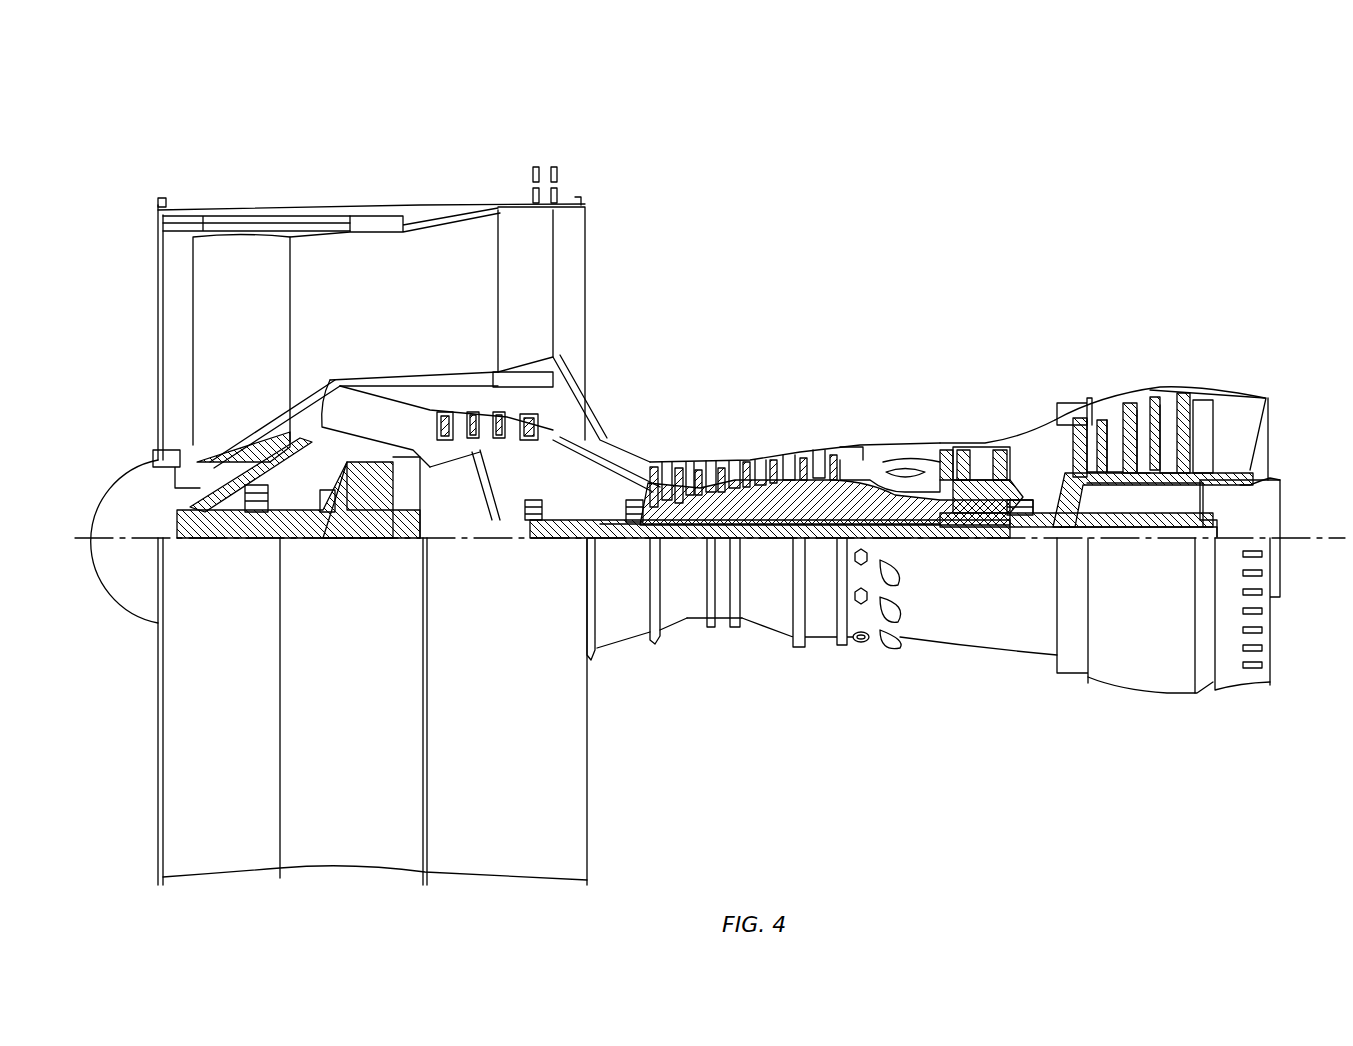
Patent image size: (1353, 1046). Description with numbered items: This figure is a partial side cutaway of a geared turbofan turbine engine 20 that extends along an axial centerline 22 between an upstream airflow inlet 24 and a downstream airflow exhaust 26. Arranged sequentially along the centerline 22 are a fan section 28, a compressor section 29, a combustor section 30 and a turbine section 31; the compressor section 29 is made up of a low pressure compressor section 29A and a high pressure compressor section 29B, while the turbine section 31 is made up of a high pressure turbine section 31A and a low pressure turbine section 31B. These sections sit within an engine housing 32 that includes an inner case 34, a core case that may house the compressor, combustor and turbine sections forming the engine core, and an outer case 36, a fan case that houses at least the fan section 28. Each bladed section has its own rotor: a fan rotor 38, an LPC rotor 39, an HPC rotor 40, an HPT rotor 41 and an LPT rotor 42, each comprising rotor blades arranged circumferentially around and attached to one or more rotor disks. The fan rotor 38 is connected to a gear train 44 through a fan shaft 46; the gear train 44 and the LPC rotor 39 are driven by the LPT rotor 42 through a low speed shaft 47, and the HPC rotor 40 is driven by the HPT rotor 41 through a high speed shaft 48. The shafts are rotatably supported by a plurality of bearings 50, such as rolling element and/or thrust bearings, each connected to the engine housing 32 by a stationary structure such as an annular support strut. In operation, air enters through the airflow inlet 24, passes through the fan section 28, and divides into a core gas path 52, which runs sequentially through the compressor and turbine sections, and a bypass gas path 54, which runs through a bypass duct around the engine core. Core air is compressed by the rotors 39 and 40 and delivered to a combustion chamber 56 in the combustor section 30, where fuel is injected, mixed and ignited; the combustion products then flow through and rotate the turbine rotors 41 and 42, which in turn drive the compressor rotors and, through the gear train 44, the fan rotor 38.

The turbine engine 20 is at (123, 186).
The axial centerline 22 is at (1330, 548).
The airflow inlet 24 is at (158, 286).
The airflow exhaust 26 is at (1272, 430).
The fan section 28 is at (338, 185).
The compressor section 29 is at (822, 123).
The low pressure compressor section 29A is at (588, 172).
The high pressure compressor section 29B is at (818, 370).
The combustor section 30 is at (948, 372).
The turbine section 31 is at (1228, 300).
The high pressure turbine section 31A is at (1035, 372).
The low pressure turbine section 31B is at (1228, 372).
The engine housing 32 is at (612, 666).
The inner case 34 is at (820, 640).
The outer case 36 is at (540, 880).
The fan rotor 38 is at (160, 456).
The LPC rotor 39 is at (483, 492).
The HPC rotor 40 is at (770, 500).
The HPT rotor 41 is at (988, 545).
The LPT rotor 42 is at (1145, 487).
The gear train 44 is at (373, 540).
The fan shaft 46 is at (228, 540).
The low speed shaft 47 is at (1108, 540).
The high speed shaft 48 is at (918, 545).
The bearings 50 is at (268, 528).
The core gas path 52 is at (607, 460).
The bypass gas path 54 is at (424, 302).
The combustion chamber 56 is at (905, 465).